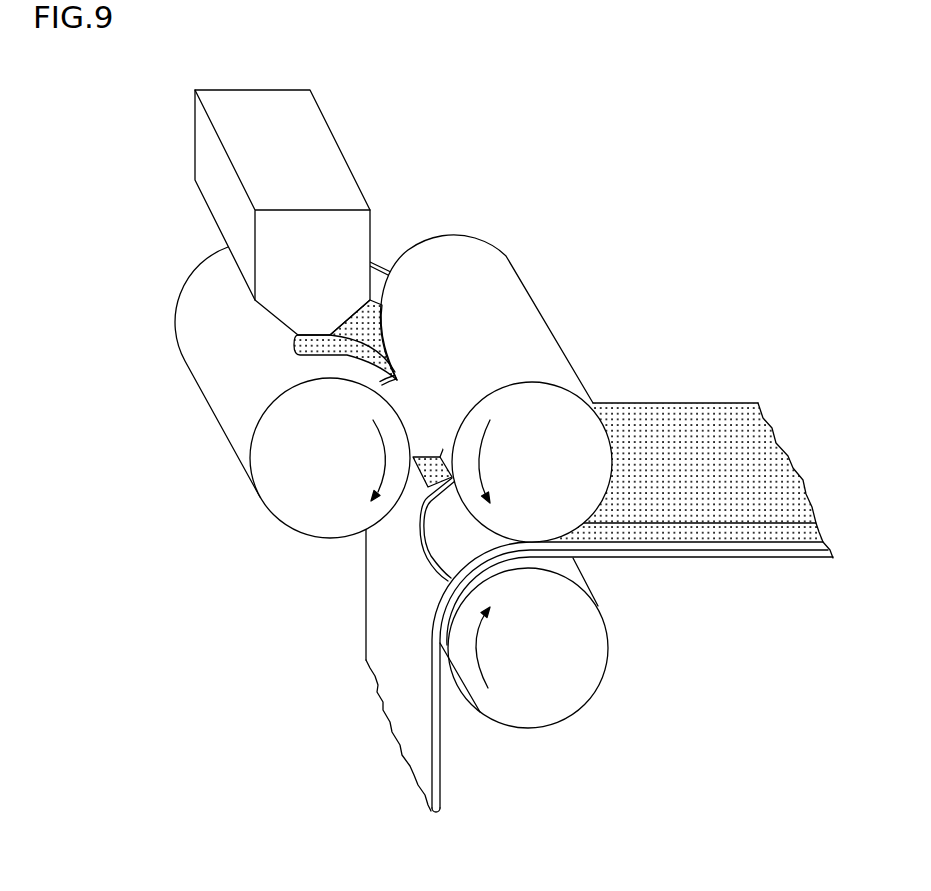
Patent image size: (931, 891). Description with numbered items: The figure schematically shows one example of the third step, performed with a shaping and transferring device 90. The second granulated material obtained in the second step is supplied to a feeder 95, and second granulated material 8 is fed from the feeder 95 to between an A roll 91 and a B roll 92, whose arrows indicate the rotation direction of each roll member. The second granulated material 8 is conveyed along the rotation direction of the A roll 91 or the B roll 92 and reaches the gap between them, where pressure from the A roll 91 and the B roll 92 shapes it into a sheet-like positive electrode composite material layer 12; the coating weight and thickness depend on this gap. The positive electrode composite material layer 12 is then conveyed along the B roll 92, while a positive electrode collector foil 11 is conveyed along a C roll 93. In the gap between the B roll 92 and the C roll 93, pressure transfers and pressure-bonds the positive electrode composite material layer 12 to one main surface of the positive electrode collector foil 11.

The shaping and transferring device 90 is at (131, 123).
The feeder 95 is at (262, 102).
The second granulated material 8 is at (297, 347).
The A roll 91 is at (197, 280).
The B roll 92 is at (490, 255).
The C roll 93 is at (590, 682).
The positive electrode composite material layer 12 is at (707, 412).
The positive electrode collector foil 11 is at (398, 700).